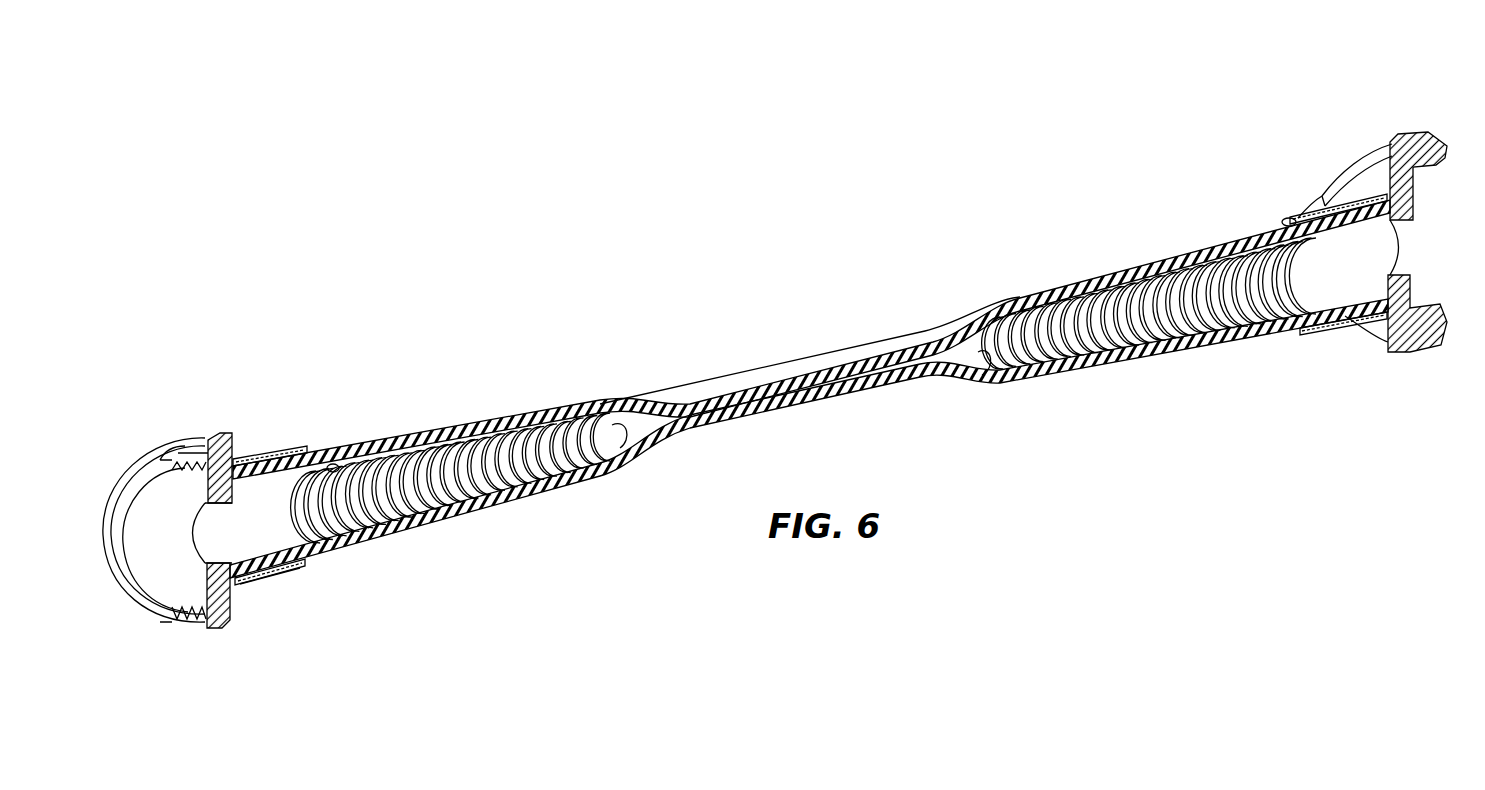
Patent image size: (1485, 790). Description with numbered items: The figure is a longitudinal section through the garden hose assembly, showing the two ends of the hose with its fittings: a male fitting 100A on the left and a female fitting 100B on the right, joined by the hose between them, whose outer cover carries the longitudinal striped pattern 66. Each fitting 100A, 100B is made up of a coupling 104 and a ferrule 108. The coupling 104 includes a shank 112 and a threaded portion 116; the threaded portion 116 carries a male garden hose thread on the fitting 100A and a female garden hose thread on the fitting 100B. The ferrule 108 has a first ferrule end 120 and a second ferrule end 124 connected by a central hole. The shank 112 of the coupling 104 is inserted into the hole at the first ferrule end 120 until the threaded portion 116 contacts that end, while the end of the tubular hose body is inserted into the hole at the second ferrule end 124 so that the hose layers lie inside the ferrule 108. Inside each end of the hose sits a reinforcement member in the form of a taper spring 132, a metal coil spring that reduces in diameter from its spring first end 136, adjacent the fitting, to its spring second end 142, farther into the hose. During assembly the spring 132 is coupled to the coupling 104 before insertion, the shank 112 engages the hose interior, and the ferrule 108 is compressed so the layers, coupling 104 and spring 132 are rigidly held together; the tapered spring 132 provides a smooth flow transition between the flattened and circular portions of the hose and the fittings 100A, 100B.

The striped pattern 66 is at (778, 376).
The male fitting 100A is at (219, 393).
The female fitting 100B is at (1384, 392).
The coupling 104 is at (200, 626).
The ferrule 108 is at (273, 595).
The shank 112 is at (283, 457).
The threaded portion 116 is at (145, 472).
The first ferrule end 120 is at (230, 627).
The second ferrule end 124 is at (312, 567).
The taper spring 132 is at (468, 508).
The spring first end 136 is at (332, 466).
The spring second end 142 is at (620, 428).